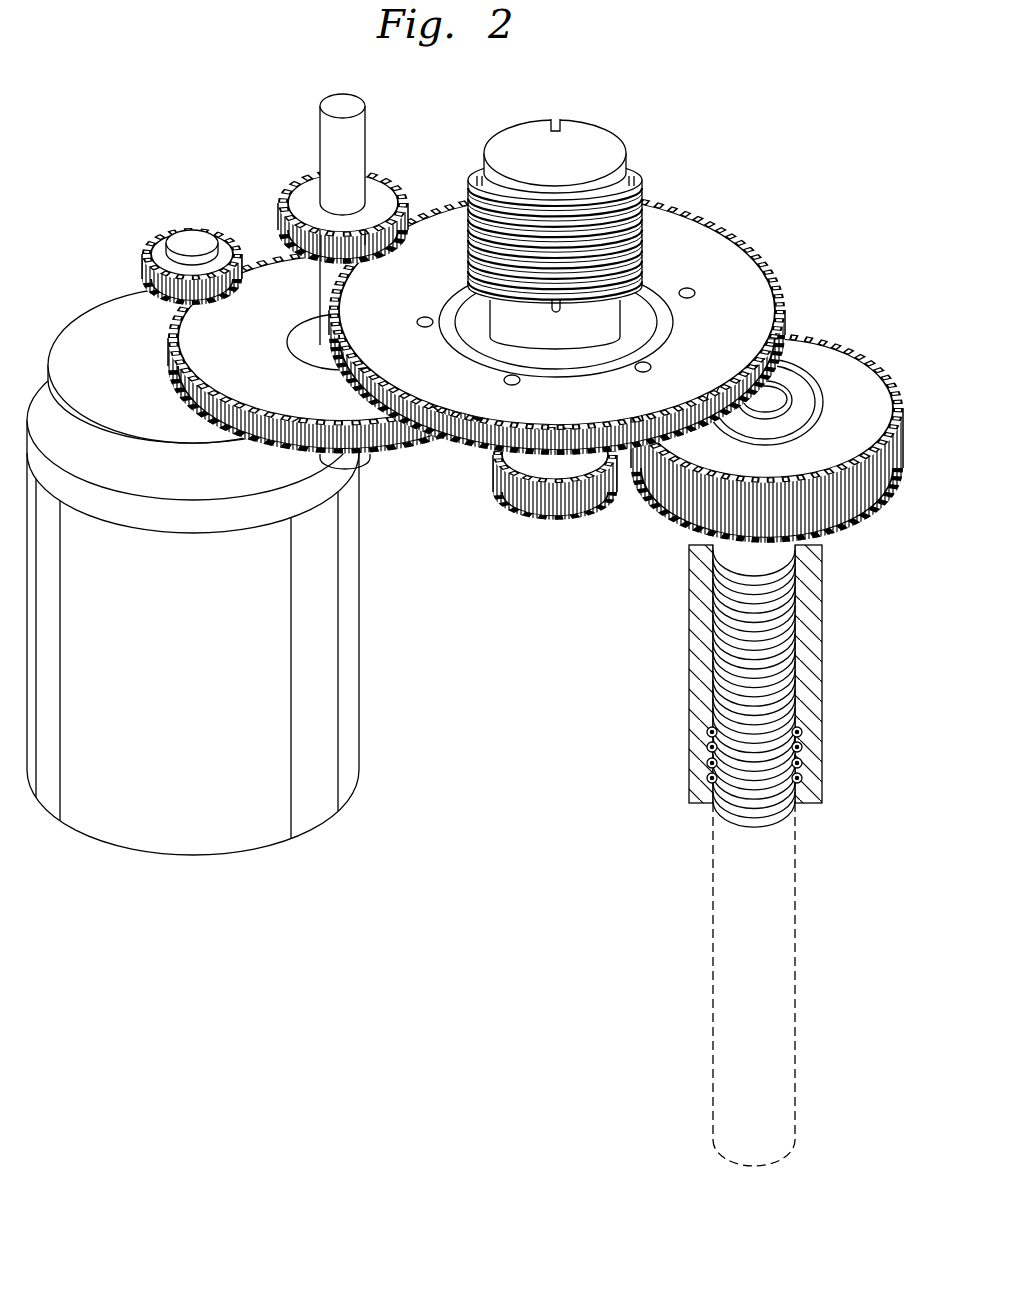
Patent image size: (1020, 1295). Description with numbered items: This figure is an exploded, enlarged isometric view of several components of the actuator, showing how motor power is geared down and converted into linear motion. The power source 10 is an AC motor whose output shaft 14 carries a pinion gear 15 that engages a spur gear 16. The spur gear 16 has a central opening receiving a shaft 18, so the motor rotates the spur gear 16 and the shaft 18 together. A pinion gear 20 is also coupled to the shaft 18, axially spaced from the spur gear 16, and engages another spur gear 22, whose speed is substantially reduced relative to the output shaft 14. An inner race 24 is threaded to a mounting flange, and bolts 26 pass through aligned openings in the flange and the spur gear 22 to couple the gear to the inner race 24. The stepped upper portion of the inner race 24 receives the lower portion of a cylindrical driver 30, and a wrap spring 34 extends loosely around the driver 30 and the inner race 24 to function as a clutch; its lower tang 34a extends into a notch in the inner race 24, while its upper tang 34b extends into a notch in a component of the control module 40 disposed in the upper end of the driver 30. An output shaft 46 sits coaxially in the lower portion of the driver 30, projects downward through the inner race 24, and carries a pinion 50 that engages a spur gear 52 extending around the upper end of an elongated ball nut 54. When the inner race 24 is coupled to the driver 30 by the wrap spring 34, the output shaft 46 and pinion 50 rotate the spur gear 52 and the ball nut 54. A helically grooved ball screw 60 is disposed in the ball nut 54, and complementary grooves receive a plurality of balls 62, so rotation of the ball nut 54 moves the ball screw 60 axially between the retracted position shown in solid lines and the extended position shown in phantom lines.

The power source 10 is at (76, 325).
The output shaft 14 is at (190, 240).
The pinion gear 15 is at (160, 240).
The spur gear 16 is at (270, 262).
The shaft 18 is at (333, 97).
The pinion gear 20 is at (303, 178).
The spur gear 22 is at (710, 230).
The inner race 24 is at (583, 309).
The bolts 26 is at (688, 289).
The driver 30 is at (485, 162).
The wrap spring 34 is at (640, 175).
The tang 34a is at (557, 311).
The tang 34b is at (558, 120).
The control module 40 is at (522, 130).
The output shaft 46 is at (532, 492).
The pinion 50 is at (545, 520).
The spur gear 52 is at (832, 345).
The ball nut 54 is at (822, 395).
The ball screw 60 is at (775, 815).
The balls 62 is at (803, 748).